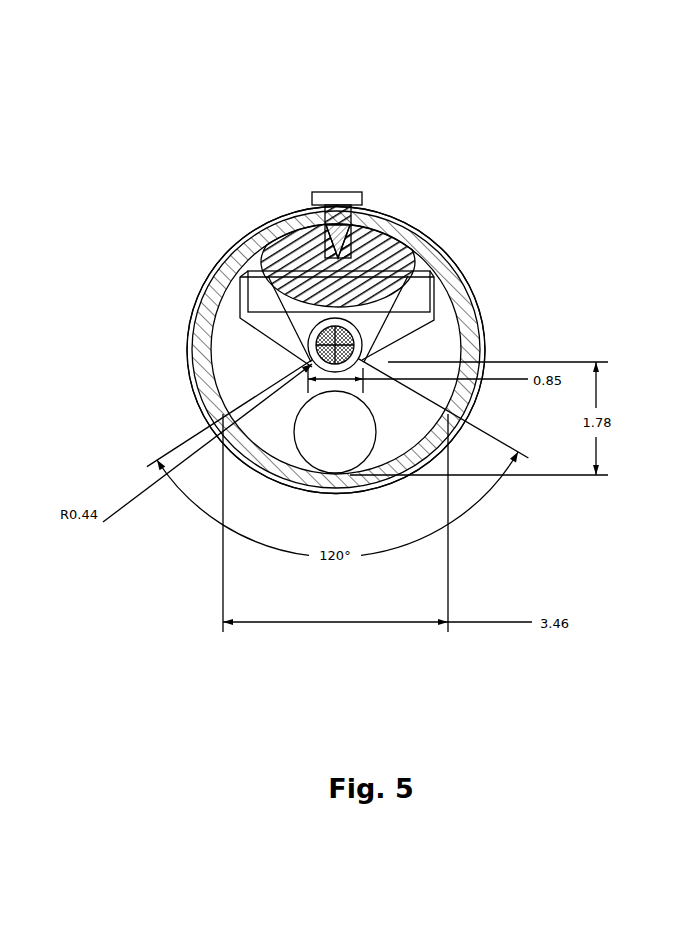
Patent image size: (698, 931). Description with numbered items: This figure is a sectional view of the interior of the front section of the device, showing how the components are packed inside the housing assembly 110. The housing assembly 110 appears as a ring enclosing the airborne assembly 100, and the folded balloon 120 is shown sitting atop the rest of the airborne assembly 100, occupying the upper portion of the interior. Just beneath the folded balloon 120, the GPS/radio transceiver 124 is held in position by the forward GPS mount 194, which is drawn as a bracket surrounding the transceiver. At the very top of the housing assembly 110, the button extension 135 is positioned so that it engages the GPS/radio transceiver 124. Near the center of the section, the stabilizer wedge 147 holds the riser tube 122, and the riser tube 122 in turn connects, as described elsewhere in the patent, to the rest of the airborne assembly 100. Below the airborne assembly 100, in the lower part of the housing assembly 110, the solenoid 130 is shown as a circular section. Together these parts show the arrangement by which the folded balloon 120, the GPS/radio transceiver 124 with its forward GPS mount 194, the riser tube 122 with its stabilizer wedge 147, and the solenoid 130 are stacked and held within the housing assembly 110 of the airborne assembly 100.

The airborne assembly 100 is at (450, 317).
The housing assembly 110 is at (263, 217).
The folded balloon 120 is at (397, 240).
The riser tube 122 is at (362, 351).
The GPS/radio transceiver 124 is at (399, 297).
The solenoid 130 is at (337, 442).
The button extension 135 is at (331, 192).
The stabilizer wedge 147 is at (265, 385).
The forward GPS mount 194 is at (237, 268).